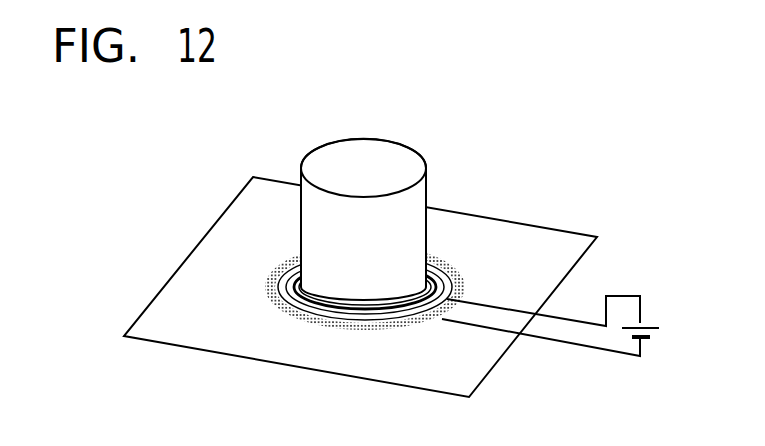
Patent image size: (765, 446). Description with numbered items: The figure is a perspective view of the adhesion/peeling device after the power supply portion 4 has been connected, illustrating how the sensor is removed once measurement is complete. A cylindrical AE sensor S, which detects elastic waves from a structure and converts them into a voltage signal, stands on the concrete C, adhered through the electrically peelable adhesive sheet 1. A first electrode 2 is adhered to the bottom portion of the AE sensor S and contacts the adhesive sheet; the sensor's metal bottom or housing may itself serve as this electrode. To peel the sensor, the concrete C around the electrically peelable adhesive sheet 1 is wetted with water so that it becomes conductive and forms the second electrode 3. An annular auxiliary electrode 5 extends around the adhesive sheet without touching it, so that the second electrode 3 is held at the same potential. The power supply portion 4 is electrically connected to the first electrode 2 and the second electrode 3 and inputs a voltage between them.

The AE sensor S is at (368, 167).
The concrete C is at (507, 248).
The electrically peelable adhesive sheet 1 is at (367, 312).
The first electrode 2 is at (345, 305).
The second electrode 3 is at (297, 288).
The power supply portion 4 is at (648, 323).
The auxiliary electrode 5 is at (287, 285).